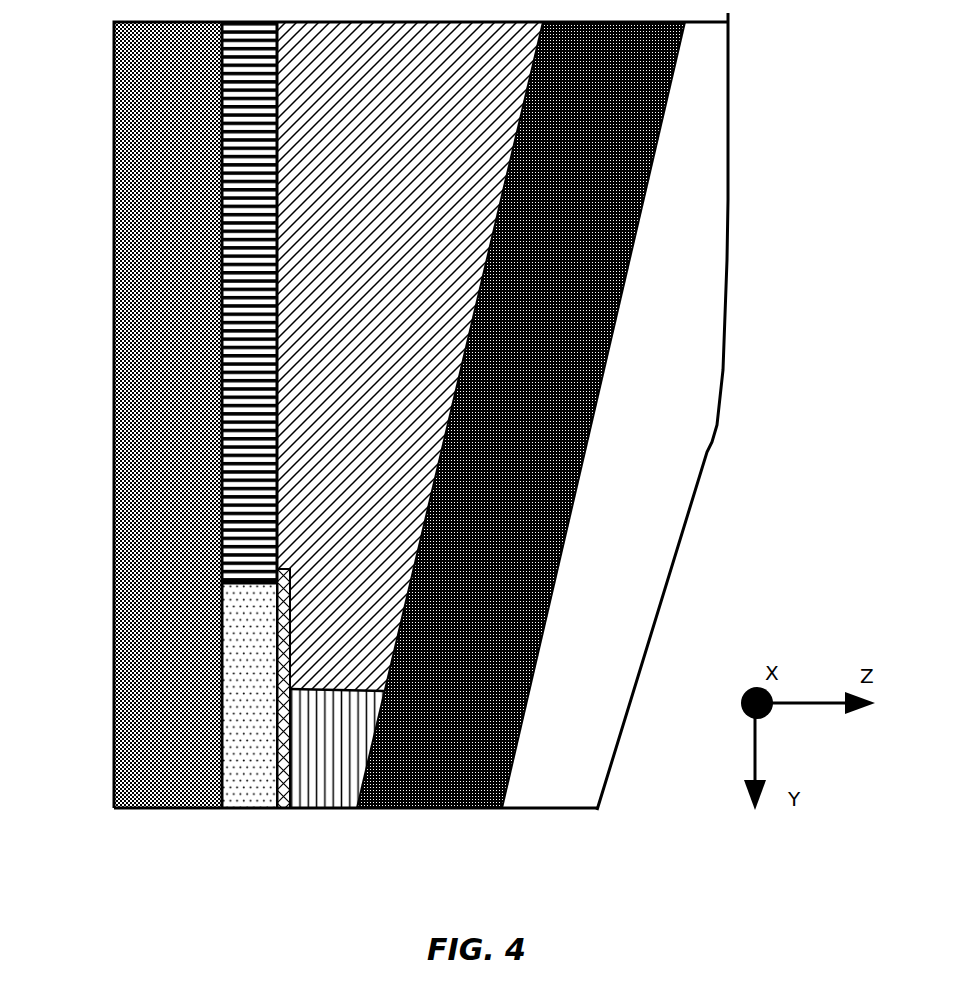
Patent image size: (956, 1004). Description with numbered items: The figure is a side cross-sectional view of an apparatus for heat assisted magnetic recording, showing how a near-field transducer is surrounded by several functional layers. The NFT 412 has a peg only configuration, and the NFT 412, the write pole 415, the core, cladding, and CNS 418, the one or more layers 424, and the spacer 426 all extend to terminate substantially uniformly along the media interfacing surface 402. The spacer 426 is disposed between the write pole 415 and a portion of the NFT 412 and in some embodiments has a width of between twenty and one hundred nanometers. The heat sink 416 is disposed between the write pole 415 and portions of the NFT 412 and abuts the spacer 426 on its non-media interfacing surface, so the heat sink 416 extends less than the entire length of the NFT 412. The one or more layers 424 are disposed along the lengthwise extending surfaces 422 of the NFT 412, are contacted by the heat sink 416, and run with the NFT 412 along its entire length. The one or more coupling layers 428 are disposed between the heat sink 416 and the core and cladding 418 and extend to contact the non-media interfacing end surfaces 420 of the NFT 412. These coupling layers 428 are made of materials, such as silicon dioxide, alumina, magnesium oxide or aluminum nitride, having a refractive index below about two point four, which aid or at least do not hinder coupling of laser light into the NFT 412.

The media interfacing surface 402 is at (542, 812).
The NFT 412 is at (248, 800).
The write pole 415 is at (545, 420).
The heat sink 416 is at (385, 370).
The core, cladding, and CNS 418 is at (195, 428).
The non-media interfacing end surfaces 420 is at (252, 584).
The lengthwise extending surfaces 422 is at (276, 765).
The layers 424 is at (277, 662).
The spacer 426 is at (351, 765).
The coupling layers 428 is at (250, 285).